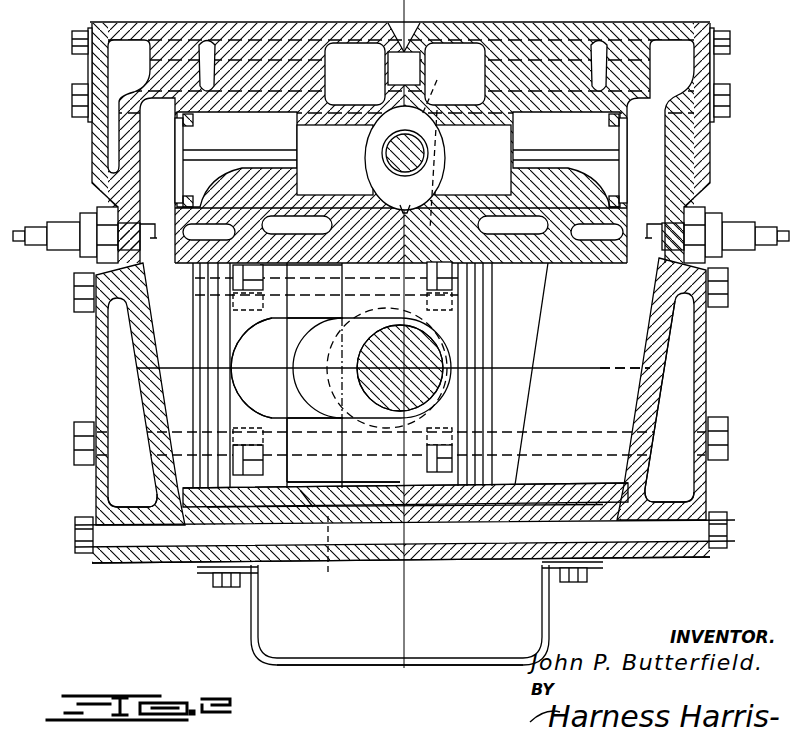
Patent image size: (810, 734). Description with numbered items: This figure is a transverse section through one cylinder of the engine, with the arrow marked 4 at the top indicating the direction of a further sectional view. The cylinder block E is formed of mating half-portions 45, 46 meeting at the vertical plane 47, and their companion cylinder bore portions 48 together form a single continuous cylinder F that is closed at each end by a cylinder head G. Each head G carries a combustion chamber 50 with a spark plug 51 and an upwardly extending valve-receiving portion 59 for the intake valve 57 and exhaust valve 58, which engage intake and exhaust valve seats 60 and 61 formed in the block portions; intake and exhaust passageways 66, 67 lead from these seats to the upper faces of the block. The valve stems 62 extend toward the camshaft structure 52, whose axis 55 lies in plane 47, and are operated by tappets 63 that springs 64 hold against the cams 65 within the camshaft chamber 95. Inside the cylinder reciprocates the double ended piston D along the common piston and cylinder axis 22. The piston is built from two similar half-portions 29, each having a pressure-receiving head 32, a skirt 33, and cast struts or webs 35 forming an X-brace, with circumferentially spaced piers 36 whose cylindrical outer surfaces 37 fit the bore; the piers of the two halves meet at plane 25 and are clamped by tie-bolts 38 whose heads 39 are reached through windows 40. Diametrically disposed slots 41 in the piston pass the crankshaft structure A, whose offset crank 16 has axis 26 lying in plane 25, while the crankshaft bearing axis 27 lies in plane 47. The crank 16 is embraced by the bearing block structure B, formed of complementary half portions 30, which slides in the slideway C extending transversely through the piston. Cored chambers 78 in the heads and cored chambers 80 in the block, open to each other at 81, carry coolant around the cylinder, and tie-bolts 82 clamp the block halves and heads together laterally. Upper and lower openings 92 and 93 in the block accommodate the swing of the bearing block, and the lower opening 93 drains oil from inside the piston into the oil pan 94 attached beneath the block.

The section line 4 is at (400, 12).
The crank portion 16 is at (367, 308).
The piston and cylinder axis 22 is at (594, 367).
The plane 25 is at (283, 221).
The crank axis 26 is at (343, 380).
The crankshaft bearing axis 27 is at (410, 378).
The piston half-portion 29 is at (246, 515).
The bearing block half portion 30 is at (300, 406).
The pressure-receiving head 32 is at (157, 323).
The skirt 33 is at (222, 238).
The strut or web 35 is at (245, 357).
The pier 36 is at (313, 507).
The pier outer surface 37 is at (375, 490).
The tie-bolt 38 is at (432, 272).
The tie-bolt head 39 is at (450, 452).
The piston window 40 is at (452, 463).
The piston slot 41 is at (337, 233).
The block half-portion 45 is at (300, 566).
The block half-portion 46 is at (533, 563).
The plane 47 is at (405, 623).
The cylinder bore portion 48 is at (585, 250).
The combustion chamber 50 is at (147, 262).
The spark plug 51 is at (72, 232).
The camshaft structure 52 is at (415, 112).
The camshaft axis 55 is at (428, 158).
The intake valve 57 is at (619, 135).
The exhaust valve 58 is at (182, 137).
The valve-receiving portion 59 is at (145, 142).
The intake valve seat 60 is at (612, 195).
The exhaust valve seat 61 is at (185, 197).
The valve stem 62 is at (258, 158).
The tappet 63 is at (404, 160).
The spring 64 is at (305, 135).
The cam 65 is at (406, 214).
The intake passageway 66 is at (549, 32).
The exhaust passageway 67 is at (218, 44).
The cored chamber 78 is at (685, 78).
The cored chamber 80 is at (562, 488).
The coolant opening 81 is at (420, 14).
The tie-bolt 82 is at (72, 93).
The upper opening 92 is at (434, 209).
The lower opening 93 is at (328, 572).
The oil pan 94 is at (548, 618).
The camshaft chamber 95 is at (434, 88).
The crankshaft structure A is at (427, 345).
The bearing block structure B is at (297, 332).
The slideway C is at (270, 388).
The double ended piston D is at (538, 384).
The cylinder block E is at (189, 564).
The cylinder F is at (612, 402).
The cylinder head G is at (108, 490).